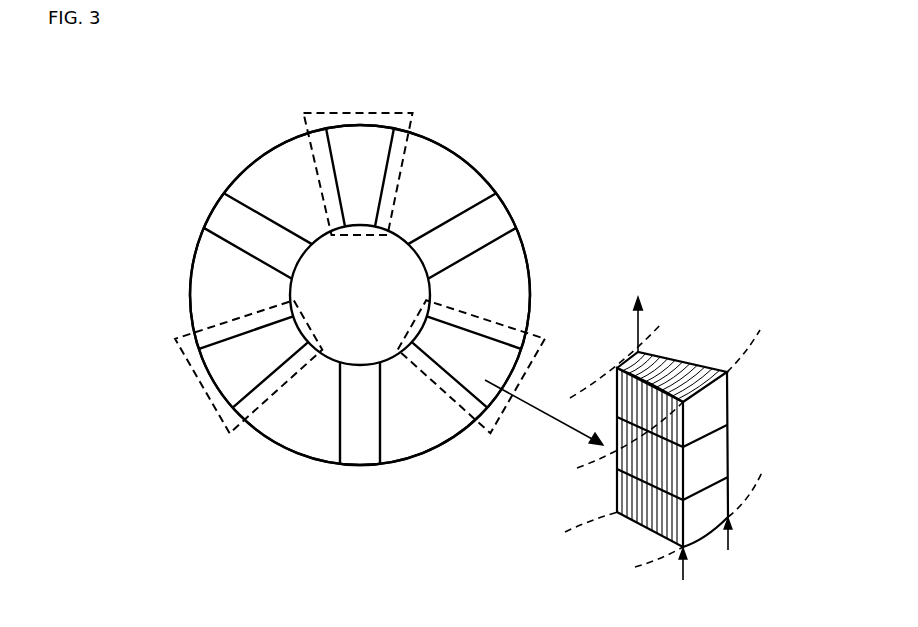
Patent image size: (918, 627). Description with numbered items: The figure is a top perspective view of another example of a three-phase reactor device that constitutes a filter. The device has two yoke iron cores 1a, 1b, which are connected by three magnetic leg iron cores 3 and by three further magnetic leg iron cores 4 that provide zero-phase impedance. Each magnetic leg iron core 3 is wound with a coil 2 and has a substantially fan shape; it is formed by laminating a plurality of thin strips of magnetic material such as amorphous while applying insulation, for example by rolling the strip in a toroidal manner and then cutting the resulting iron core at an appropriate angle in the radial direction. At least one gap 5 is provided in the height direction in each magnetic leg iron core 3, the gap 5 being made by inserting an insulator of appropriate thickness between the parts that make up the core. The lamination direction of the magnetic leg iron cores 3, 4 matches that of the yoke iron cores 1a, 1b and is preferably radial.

The yoke iron core 1a is at (270, 177).
The yoke iron core 1b is at (360, 295).
The coil 2 is at (403, 112).
The magnetic leg iron core 3 is at (357, 157).
The magnetic leg iron core for zero-phase impedance 4 is at (230, 222).
The gap 5 is at (628, 513).